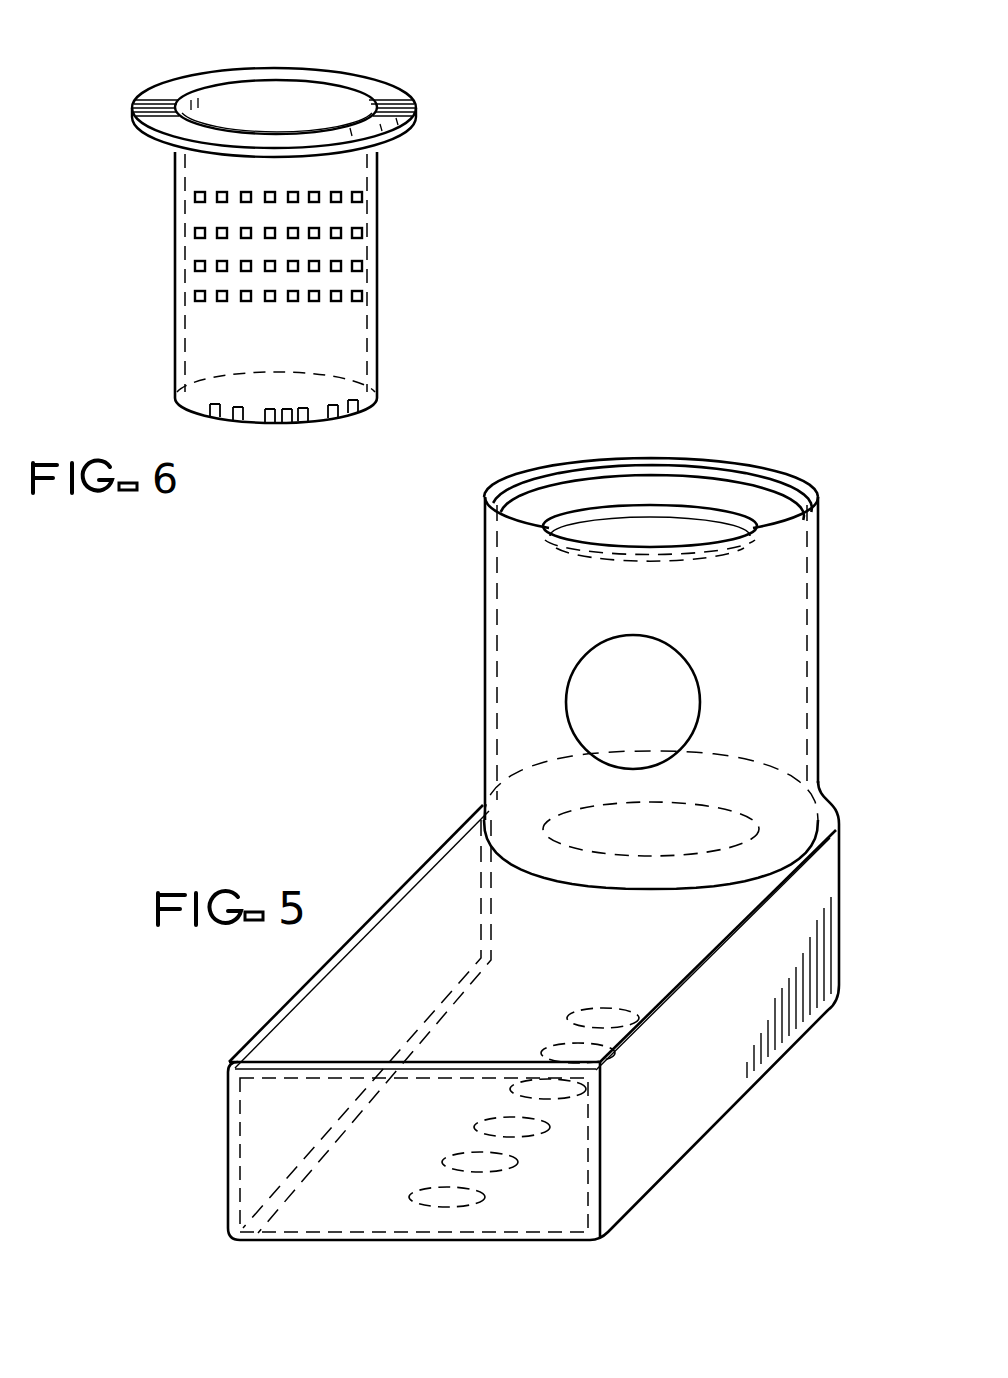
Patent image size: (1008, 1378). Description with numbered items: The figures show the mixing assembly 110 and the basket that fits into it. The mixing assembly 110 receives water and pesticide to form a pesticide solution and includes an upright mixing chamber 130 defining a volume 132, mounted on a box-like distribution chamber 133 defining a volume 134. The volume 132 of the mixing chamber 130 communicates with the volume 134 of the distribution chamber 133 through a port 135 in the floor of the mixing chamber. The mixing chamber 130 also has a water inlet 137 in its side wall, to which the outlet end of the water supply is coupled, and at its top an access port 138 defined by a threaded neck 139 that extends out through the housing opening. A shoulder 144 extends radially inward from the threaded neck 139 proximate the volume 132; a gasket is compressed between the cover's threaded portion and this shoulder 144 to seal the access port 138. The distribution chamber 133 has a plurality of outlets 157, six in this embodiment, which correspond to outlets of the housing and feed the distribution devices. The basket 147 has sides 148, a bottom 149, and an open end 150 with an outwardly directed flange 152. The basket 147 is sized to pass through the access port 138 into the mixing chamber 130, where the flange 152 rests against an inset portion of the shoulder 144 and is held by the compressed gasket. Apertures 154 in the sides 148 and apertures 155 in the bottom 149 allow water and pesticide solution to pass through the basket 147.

In FIG. 5, the mixing assembly 110 is at (898, 846).
In FIG. 5, the mixing chamber 130 is at (626, 633).
In FIG. 5, the volume 132 is at (758, 670).
In FIG. 5, the distribution chamber 133 is at (827, 927).
In FIG. 5, the volume 134 is at (567, 1038).
In FIG. 5, the port 135 is at (627, 838).
In FIG. 5, the water inlet 137 is at (606, 694).
In FIG. 5, the access port 138 is at (618, 522).
In FIG. 5, the threaded neck 139 is at (680, 477).
In FIG. 5, the shoulder 144 is at (742, 514).
In FIG. 6, the basket 147 is at (446, 229).
In FIG. 6, the sides 148 is at (378, 293).
In FIG. 6, the bottom 149 is at (356, 416).
In FIG. 6, the open end 150 is at (313, 82).
In FIG. 6, the flange 152 is at (405, 97).
In FIG. 6, the apertures 154 is at (224, 197).
In FIG. 6, the apertures 155 is at (281, 423).
In FIG. 5, the outlets 157 is at (463, 1197).